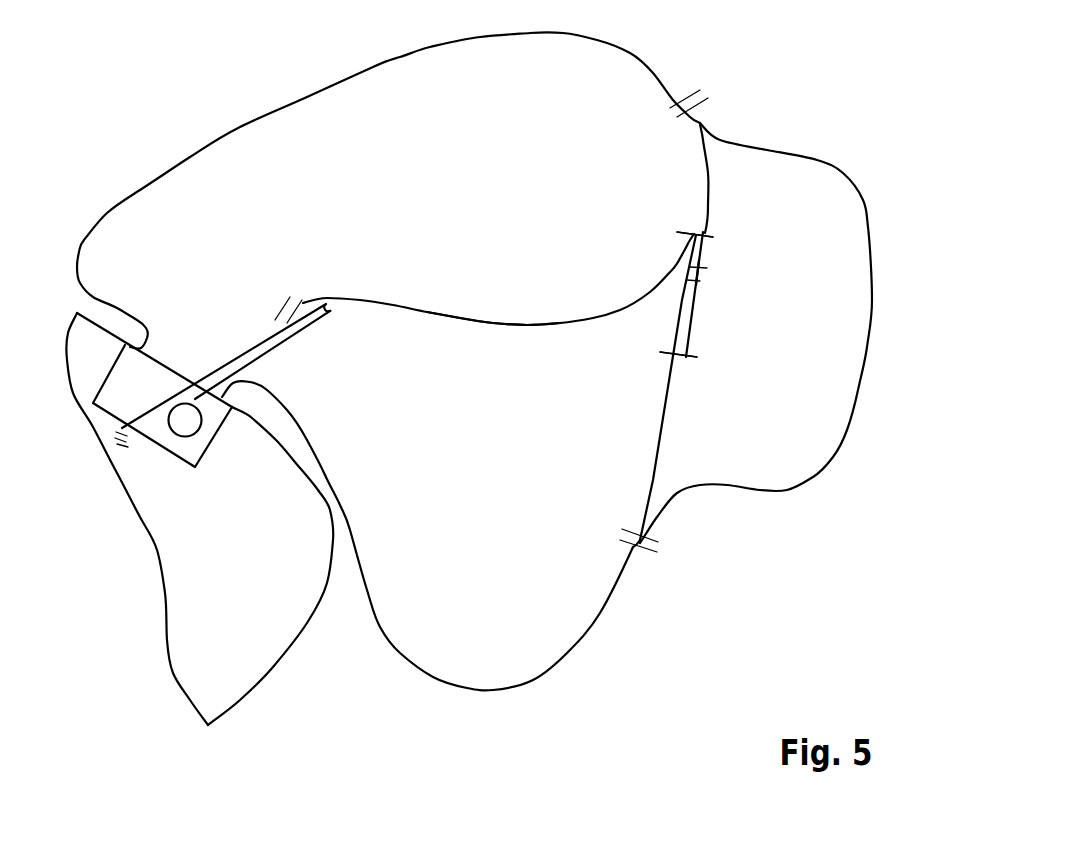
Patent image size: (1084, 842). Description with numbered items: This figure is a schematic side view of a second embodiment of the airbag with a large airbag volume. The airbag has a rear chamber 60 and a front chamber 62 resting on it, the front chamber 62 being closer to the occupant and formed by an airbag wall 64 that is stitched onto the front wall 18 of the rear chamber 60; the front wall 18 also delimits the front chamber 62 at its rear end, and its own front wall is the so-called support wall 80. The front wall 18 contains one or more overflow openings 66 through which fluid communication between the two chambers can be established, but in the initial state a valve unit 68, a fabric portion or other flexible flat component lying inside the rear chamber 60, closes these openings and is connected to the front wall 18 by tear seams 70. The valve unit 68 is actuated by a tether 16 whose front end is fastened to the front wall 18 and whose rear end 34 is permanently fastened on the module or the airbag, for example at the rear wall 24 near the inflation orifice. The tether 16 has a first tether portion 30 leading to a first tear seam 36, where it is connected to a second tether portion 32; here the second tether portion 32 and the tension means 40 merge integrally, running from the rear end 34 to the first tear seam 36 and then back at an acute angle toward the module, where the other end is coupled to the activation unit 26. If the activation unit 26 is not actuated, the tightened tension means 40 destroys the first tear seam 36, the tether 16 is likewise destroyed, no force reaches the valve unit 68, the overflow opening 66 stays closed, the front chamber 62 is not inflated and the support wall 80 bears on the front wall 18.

The tether 16 is at (493, 316).
The front wall 18 is at (602, 613).
The rear wall 24 is at (370, 607).
The activation unit 26 is at (183, 440).
The first tether portion 30 is at (393, 303).
The second tether portion 32 is at (237, 360).
The rear end 34 is at (123, 427).
The first tear seam 36 is at (300, 300).
The tension means 40 is at (253, 357).
The rear chamber 60 is at (418, 73).
The front chamber 62 is at (802, 190).
The airbag wall 64 is at (767, 490).
The overflow opening 66 is at (703, 273).
The valve unit 68 is at (672, 322).
The tear seams 70 is at (710, 233).
The support wall 80 is at (867, 347).